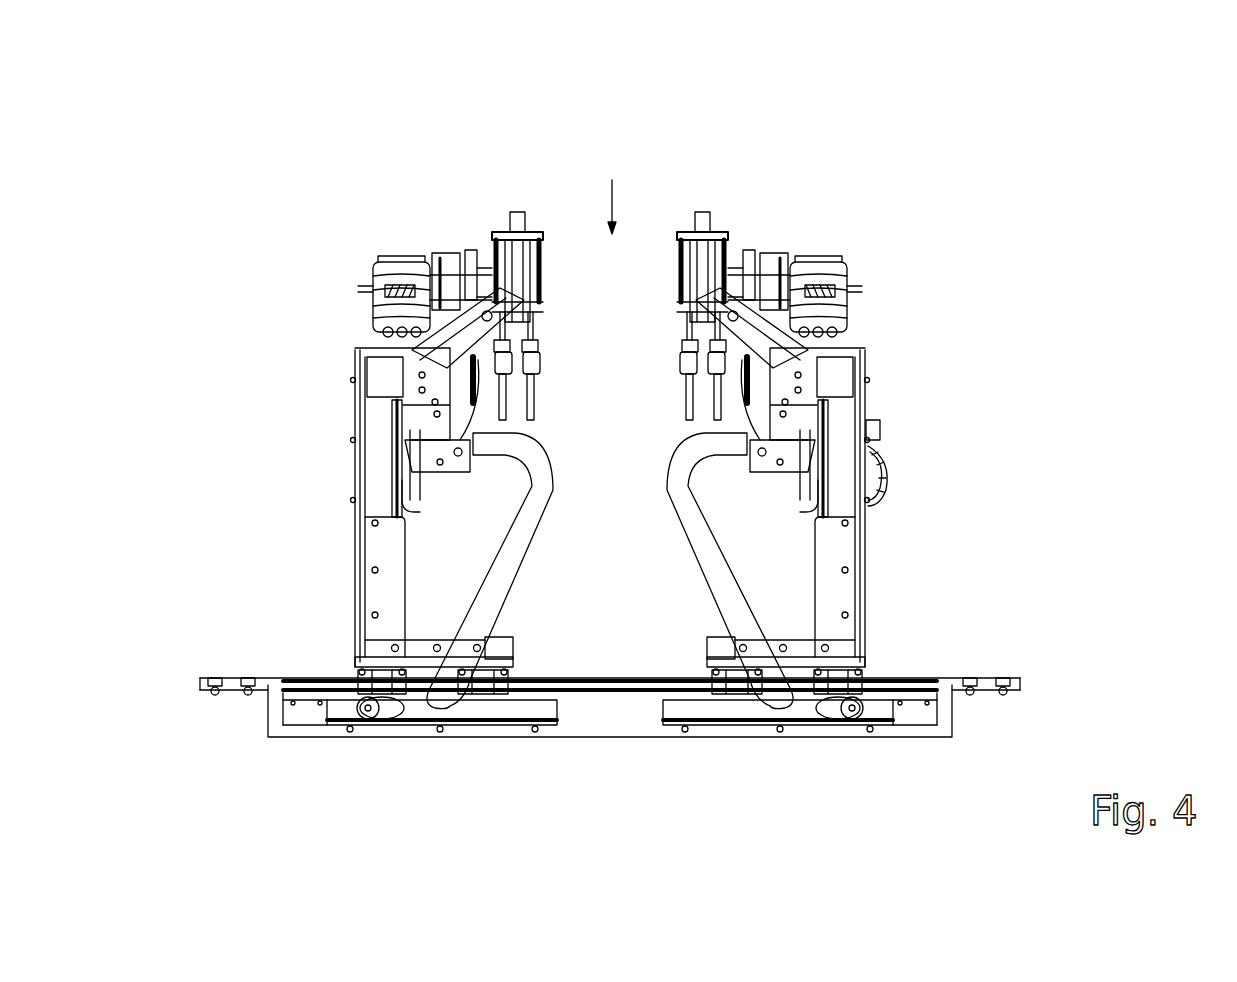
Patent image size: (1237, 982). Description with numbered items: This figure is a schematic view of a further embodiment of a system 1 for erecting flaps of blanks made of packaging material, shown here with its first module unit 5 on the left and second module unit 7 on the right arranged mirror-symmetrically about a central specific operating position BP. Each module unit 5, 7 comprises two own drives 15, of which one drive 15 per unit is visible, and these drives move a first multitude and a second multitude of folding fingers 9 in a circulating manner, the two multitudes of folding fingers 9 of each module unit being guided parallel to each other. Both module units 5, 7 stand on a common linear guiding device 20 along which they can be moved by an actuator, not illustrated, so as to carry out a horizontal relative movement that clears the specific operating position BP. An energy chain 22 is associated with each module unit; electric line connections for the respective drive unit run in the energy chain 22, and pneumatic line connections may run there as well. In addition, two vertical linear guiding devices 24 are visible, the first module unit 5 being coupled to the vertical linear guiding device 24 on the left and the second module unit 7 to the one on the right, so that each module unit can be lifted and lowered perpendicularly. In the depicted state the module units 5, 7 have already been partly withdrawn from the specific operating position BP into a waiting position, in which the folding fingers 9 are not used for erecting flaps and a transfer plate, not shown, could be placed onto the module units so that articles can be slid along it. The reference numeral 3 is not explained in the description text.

The system 1 is at (642, 808).
The welding device assembly 3 is at (701, 125).
The first module unit 5 is at (458, 203).
The second module unit 7 is at (799, 176).
The folding fingers 9 is at (520, 212).
The own drive 15 is at (399, 258).
The linear guiding device 20 is at (484, 688).
The energy chain 22 is at (497, 577).
The vertical linear guiding device 24 is at (380, 411).
The specific operating position BP is at (610, 189).